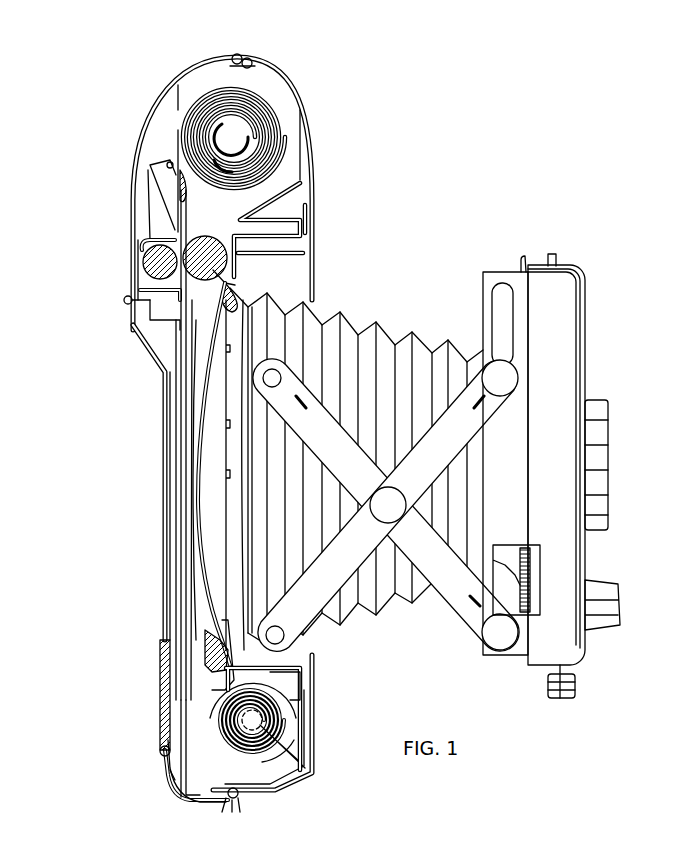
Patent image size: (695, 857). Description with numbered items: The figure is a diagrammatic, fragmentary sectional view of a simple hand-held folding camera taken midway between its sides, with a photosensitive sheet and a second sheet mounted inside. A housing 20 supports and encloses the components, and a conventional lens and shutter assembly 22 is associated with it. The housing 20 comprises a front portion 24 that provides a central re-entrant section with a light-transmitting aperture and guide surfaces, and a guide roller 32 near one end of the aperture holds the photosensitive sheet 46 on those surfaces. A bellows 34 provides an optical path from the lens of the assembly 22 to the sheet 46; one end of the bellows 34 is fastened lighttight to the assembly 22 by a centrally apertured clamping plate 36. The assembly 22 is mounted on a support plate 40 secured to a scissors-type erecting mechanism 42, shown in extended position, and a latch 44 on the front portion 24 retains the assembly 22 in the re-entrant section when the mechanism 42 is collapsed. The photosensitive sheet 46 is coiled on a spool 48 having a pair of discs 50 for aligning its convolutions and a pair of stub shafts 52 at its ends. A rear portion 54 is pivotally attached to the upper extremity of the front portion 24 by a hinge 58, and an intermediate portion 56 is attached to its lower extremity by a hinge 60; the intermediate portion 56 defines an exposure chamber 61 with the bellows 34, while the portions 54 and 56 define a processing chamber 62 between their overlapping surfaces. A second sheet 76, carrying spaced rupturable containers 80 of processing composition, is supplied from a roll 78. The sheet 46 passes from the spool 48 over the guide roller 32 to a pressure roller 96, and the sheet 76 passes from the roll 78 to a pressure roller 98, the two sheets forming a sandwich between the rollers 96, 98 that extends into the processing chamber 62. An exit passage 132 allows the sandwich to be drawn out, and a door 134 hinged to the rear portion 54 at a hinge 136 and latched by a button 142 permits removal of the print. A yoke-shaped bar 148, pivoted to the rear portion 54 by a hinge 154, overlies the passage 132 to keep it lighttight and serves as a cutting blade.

The housing 20 is at (166, 555).
The lens and shutter assembly 22 is at (590, 350).
The front portion 24 is at (313, 156).
The guide roller 32 is at (222, 668).
The bellows 34 is at (417, 320).
The clamping plate 36 is at (508, 626).
The support plate 40 is at (530, 553).
The scissors-type erecting mechanism 42 is at (445, 466).
The latch 44 is at (316, 222).
The photosensitive sheet 46 is at (205, 612).
The spool 48 is at (270, 715).
The discs 50 is at (300, 683).
The stub shafts 52 is at (298, 773).
The rear portion 54 is at (131, 236).
The intermediate portion 56 is at (182, 516).
The hinge 58 is at (238, 57).
The hinge 60 is at (240, 797).
The exposure chamber 61 is at (207, 437).
The processing chamber 62 is at (178, 396).
The second sheet 76 is at (178, 133).
The roll 78 is at (298, 113).
The containers 80 is at (218, 167).
The pressure roller 96 is at (246, 280).
The pressure roller 98 is at (150, 267).
The exit passage 132 is at (168, 770).
The door 134 is at (166, 487).
The hinge 136 is at (124, 301).
The button 142 is at (162, 686).
The yoke-shaped bar 148 is at (172, 800).
The hinge 154 is at (162, 750).